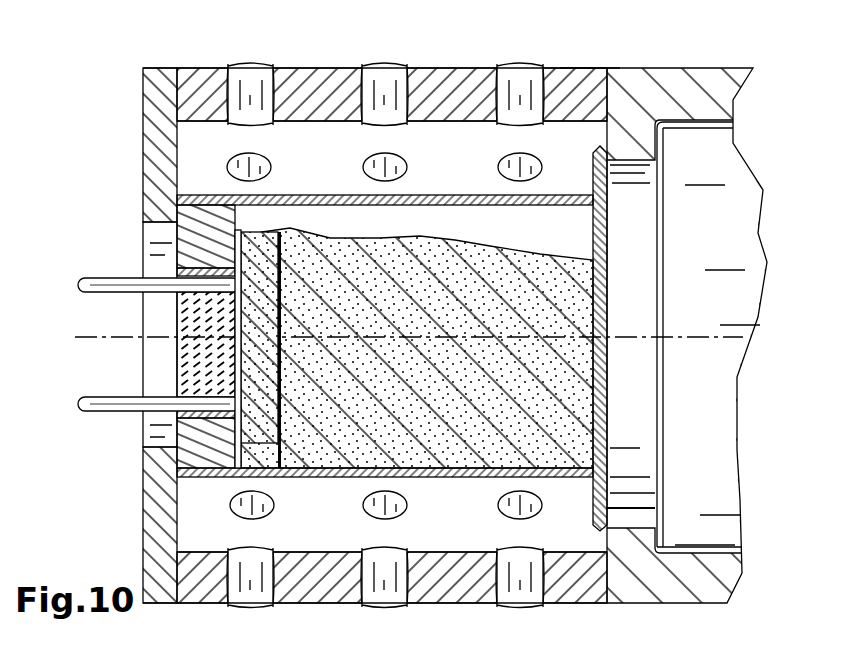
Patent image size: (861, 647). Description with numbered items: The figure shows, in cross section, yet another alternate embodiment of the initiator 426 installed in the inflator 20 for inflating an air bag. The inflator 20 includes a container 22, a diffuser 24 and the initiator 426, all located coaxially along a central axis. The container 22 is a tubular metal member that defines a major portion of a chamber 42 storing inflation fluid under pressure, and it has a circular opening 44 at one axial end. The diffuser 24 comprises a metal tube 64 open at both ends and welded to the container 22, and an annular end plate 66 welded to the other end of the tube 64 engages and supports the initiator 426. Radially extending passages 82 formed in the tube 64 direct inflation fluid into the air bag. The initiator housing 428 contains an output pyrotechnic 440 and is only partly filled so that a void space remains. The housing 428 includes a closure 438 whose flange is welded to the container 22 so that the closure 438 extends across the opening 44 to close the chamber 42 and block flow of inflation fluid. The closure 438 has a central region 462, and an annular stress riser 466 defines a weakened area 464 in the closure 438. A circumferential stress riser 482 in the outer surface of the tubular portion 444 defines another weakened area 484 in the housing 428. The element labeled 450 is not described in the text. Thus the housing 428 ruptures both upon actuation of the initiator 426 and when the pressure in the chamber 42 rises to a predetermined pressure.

The inflator 20 is at (594, 38).
The container 22 is at (674, 61).
The diffuser 24 is at (216, 62).
The chamber 42 is at (678, 474).
The circular opening 44 is at (610, 510).
The metal tube 64 is at (323, 100).
The annular end plate 66 is at (153, 122).
The radially extending passages 82 is at (523, 96).
The initiator 426 is at (437, 186).
The initiator housing 428 is at (204, 191).
The closure 438 is at (608, 202).
The output pyrotechnic 440 is at (333, 273).
The tubular portion 444 is at (210, 475).
The sleeve 450 is at (608, 225).
The central region 462 is at (608, 370).
The weakened area 464 is at (620, 431).
The annular stress riser 466 is at (608, 443).
The circumferential stress riser 482 is at (485, 195).
The weakened area 484 is at (490, 484).